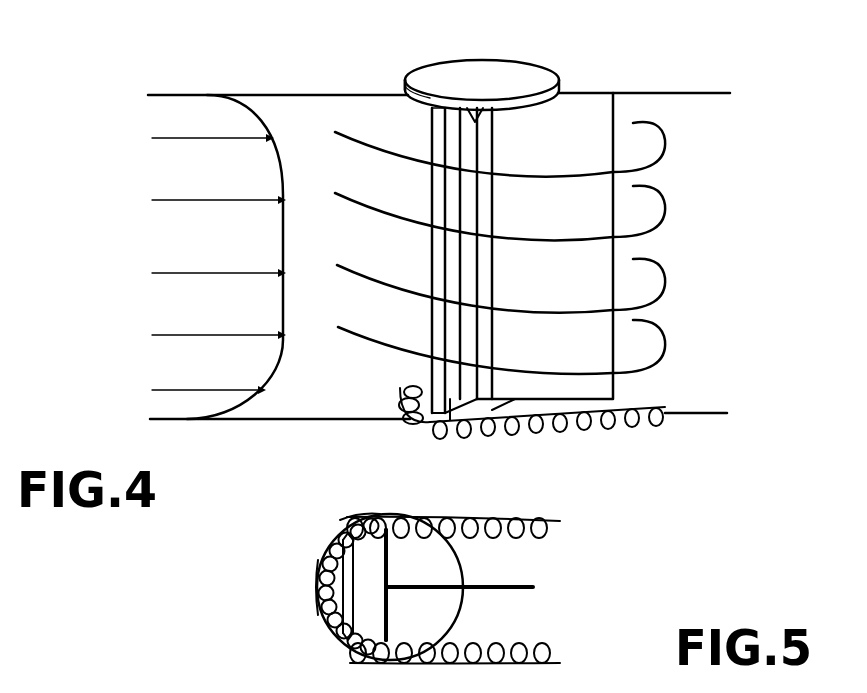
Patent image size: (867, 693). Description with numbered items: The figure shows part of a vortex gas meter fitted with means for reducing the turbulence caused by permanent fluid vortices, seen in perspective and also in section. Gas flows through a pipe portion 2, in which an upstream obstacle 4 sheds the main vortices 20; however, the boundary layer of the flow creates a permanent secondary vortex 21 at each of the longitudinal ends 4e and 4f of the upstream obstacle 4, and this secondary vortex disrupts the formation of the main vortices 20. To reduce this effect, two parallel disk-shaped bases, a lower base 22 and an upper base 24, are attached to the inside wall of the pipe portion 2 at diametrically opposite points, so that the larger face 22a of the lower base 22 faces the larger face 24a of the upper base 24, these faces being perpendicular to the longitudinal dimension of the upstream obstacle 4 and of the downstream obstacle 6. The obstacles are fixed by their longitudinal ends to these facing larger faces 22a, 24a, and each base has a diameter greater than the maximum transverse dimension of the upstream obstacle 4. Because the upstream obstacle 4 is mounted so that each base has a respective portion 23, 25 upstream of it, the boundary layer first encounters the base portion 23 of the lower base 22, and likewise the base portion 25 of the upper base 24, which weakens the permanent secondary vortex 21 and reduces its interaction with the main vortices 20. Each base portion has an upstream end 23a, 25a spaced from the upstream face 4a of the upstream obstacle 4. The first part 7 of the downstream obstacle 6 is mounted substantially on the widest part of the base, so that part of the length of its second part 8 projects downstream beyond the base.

In FIG. 4, the pipe portion 2 is at (276, 95).
In FIG. 4, the upstream obstacle 4 is at (432, 190).
In FIG. 5, the upstream obstacle 4 is at (330, 618).
In FIG. 5, the upstream face of the upstream obstacle 4a is at (322, 566).
In FIG. 4, the longitudinal end of the upstream obstacle 4e is at (456, 418).
In FIG. 4, the longitudinal end of the upstream obstacle 4f is at (432, 113).
In FIG. 4, the downstream obstacle 6 is at (613, 257).
In FIG. 4, the first part of the downstream obstacle 7 is at (451, 421).
In FIG. 5, the first part of the downstream obstacle 7 is at (390, 623).
In FIG. 4, the second part of the downstream obstacle 8 is at (600, 110).
In FIG. 5, the second part of the downstream obstacle 8 is at (533, 587).
In FIG. 4, the main vortices 20 is at (664, 276).
In FIG. 4, the permanent secondary vortex 21 is at (484, 436).
In FIG. 5, the permanent secondary vortex 21 is at (560, 521).
In FIG. 4, the lower base 22 is at (424, 424).
In FIG. 5, the lower base 22 is at (453, 549).
In FIG. 4, the larger face of the lower base 22a is at (406, 380).
In FIG. 5, the larger face of the lower base 22a is at (427, 543).
In FIG. 5, the base portion of the lower base 23 is at (325, 603).
In FIG. 4, the upstream end of the base portion 23a is at (402, 402).
In FIG. 5, the upstream end of the base portion 23a is at (320, 583).
In FIG. 4, the upper base 24 is at (533, 88).
In FIG. 4, the larger face of the upper base 24a is at (478, 112).
In FIG. 4, the base portion of the upper base 25 is at (410, 75).
In FIG. 4, the upstream end of the base portion 25a is at (403, 90).